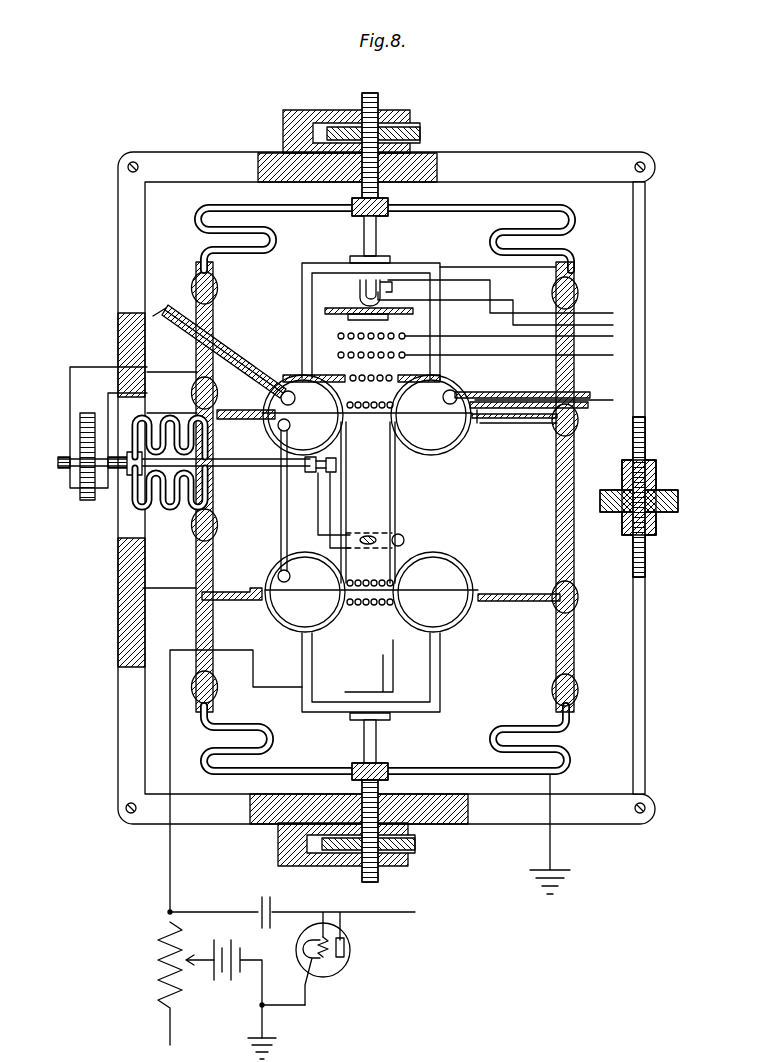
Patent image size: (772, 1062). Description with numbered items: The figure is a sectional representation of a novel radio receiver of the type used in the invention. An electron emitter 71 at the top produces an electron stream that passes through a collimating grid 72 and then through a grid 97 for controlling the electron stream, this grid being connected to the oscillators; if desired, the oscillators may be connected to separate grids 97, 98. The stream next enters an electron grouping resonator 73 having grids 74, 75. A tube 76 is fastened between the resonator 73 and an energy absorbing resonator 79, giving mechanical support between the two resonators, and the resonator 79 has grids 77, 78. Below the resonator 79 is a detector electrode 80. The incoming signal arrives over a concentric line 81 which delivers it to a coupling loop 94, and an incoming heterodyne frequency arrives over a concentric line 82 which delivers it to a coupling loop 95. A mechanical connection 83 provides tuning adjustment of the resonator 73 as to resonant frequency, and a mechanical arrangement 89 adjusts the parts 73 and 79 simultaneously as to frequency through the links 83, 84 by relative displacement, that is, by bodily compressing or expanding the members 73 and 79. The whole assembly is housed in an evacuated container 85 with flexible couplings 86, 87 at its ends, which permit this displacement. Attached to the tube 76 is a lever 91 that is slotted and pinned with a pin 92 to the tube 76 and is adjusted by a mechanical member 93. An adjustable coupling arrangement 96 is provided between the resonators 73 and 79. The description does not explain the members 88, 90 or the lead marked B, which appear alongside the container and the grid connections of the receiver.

The electron emitter 71 is at (358, 288).
The collimating grid 72 is at (352, 376).
The electron grouping resonator 73 is at (288, 375).
The grid 74 is at (376, 402).
The grid 75 is at (360, 428).
The tube 76 is at (397, 482).
The grid 77 is at (378, 579).
The grid 78 is at (358, 606).
The energy absorbing resonator 79 is at (458, 556).
The detector electrode 80 is at (386, 664).
The concentric line 81 is at (519, 393).
The concentric line 82 is at (248, 356).
The mechanical connection 83 is at (302, 293).
The link 84 is at (444, 649).
The evacuated container 85 is at (576, 562).
The flexible coupling 86 is at (572, 756).
The flexible coupling 87 is at (576, 220).
The screw rod 88 is at (648, 374).
The mechanical arrangement 89 is at (657, 526).
The plate 90 is at (232, 590).
The lever 91 is at (312, 520).
The pin 92 is at (374, 532).
The mechanical member 93 is at (262, 436).
The coupling loop 94 is at (442, 402).
The coupling loop 95 is at (296, 400).
The adjustable coupling arrangement 96 is at (278, 518).
The grid 97 is at (348, 334).
The grid 98 is at (348, 353).
The battery leads B is at (620, 288).